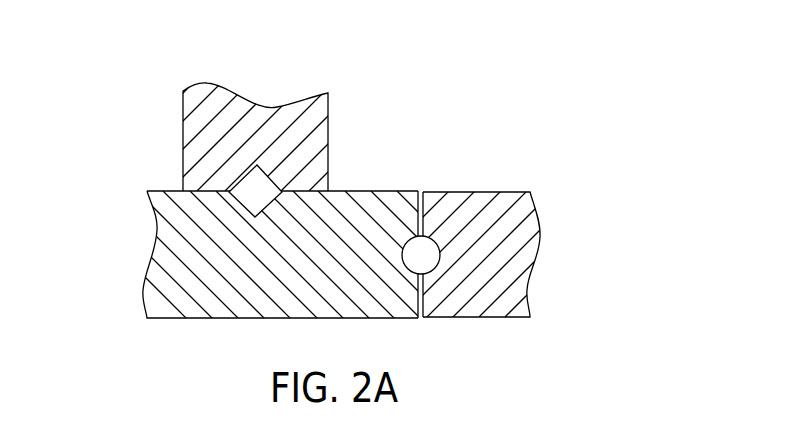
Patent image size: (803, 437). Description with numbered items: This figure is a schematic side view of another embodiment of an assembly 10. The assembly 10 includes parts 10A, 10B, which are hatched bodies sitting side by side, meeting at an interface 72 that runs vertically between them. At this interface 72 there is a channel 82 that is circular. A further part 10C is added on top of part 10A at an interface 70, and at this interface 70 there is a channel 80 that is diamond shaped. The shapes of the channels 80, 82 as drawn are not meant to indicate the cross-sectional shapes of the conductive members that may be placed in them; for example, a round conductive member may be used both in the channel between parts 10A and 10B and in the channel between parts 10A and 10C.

The assembly 10 is at (404, 86).
The part 10A is at (146, 292).
The part 10B is at (537, 248).
The part 10C is at (183, 112).
The interface 70 is at (336, 185).
The interface 72 is at (419, 187).
The channel 80 is at (257, 190).
The channel 82 is at (428, 262).